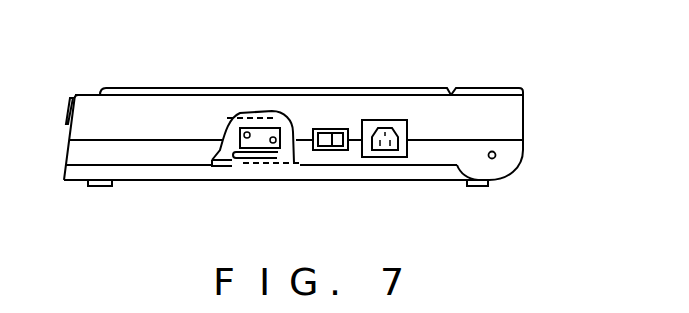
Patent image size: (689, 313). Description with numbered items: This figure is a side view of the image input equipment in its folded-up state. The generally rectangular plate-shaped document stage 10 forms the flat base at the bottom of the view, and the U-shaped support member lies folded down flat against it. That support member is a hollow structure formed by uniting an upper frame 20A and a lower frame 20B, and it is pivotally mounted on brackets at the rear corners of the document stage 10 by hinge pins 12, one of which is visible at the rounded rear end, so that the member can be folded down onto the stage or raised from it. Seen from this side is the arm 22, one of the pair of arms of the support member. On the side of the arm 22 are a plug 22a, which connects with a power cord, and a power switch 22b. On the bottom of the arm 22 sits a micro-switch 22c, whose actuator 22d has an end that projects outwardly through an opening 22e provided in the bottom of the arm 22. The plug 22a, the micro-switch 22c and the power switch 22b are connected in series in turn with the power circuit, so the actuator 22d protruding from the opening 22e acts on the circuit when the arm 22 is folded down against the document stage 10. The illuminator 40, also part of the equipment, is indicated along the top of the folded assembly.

The document stage 10 is at (140, 172).
The hinge pin 12 is at (490, 158).
The upper frame 20A is at (475, 98).
The lower frame 20B is at (505, 160).
The arm 22 is at (150, 105).
The plug 22a is at (388, 150).
The power switch 22b is at (325, 150).
The micro-switch 22c is at (263, 127).
The actuator 22d is at (228, 158).
The opening 22e is at (244, 160).
The illuminator 40 is at (382, 84).